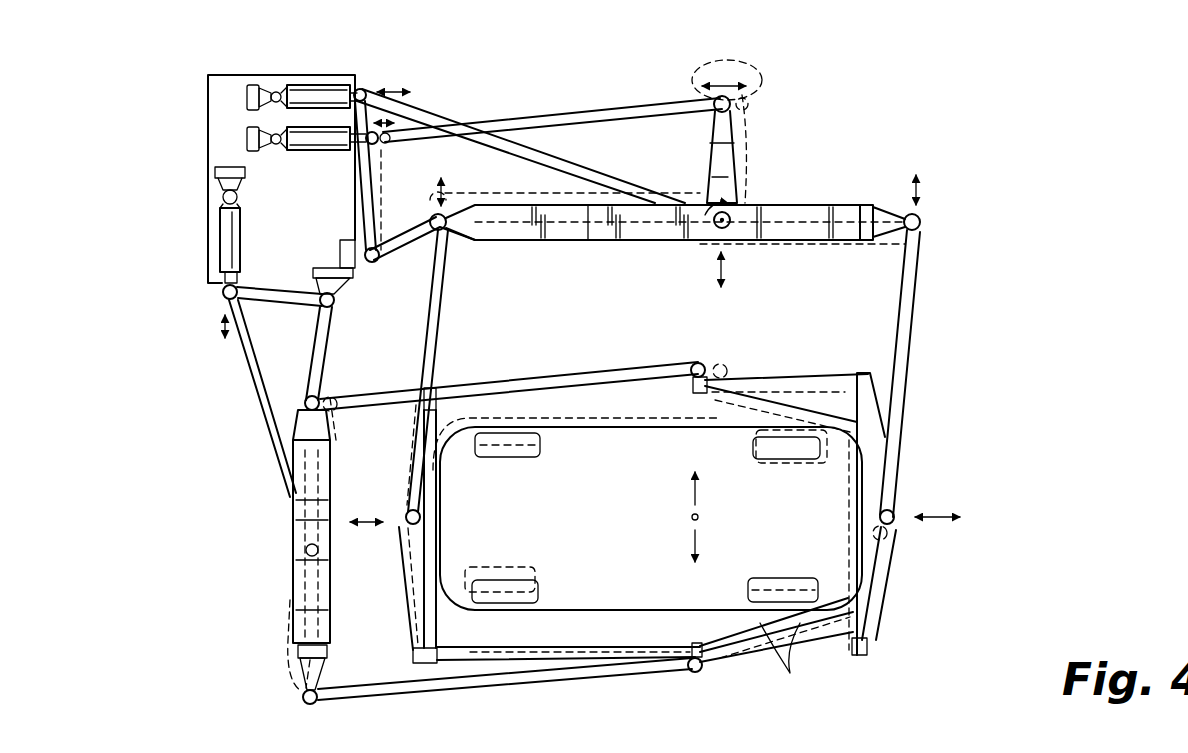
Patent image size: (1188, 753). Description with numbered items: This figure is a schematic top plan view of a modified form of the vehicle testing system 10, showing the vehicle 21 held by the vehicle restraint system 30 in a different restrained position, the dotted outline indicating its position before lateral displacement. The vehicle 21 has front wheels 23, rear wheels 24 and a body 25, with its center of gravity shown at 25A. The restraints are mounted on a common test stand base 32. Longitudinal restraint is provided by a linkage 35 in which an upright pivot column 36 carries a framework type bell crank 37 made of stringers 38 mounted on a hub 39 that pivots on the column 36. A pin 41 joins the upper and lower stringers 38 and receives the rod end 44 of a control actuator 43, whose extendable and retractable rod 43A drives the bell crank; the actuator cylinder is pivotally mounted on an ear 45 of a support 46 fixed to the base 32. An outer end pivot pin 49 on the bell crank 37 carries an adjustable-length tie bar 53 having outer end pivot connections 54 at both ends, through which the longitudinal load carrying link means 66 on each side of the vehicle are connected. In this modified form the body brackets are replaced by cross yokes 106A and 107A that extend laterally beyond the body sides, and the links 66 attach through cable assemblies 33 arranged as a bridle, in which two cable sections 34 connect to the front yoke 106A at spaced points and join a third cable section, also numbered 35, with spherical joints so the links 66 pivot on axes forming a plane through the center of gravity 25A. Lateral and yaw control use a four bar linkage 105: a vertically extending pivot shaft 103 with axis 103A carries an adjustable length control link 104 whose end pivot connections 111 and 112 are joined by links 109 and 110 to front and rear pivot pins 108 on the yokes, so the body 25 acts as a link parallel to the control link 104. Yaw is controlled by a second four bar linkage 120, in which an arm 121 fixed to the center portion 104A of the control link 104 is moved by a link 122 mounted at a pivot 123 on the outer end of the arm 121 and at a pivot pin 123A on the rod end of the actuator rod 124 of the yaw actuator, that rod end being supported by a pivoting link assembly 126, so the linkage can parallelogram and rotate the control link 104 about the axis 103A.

The vehicle testing system 10 is at (822, 150).
The vehicle 21 is at (650, 617).
The front wheels 23 is at (758, 460).
The rear wheels 24 is at (515, 458).
The vehicle body 25 is at (600, 612).
The vehicle center of gravity 25A is at (700, 517).
The vehicle restraint system 30 is at (540, 104).
The test stand base 32 is at (230, 82).
The cable assemblies 33 is at (748, 375).
The cable sections 34 is at (803, 407).
The longitudinal restraint linkage 35 is at (503, 392).
The upright pivot column 36 is at (348, 267).
The bell crank 37 is at (262, 392).
The stringers 38 is at (266, 299).
The hub 39 is at (335, 304).
The pin 41 is at (222, 291).
The control actuator 43 is at (237, 232).
The extendable and retractable rod 43A is at (238, 281).
The rod end 44 is at (218, 300).
The ear 45 is at (222, 197).
The support 46 is at (240, 176).
The outer end pivot pin 49 is at (306, 550).
The tie bar 53 is at (292, 607).
The outer end pivot connections 54 is at (308, 397).
The longitudinal load carrying link means 66 is at (541, 376).
The pivot shaft 103 is at (726, 232).
The pivot shaft axis 103A is at (745, 203).
The control link 104 is at (782, 242).
The center portion of control link 104A is at (660, 228).
The four bar linkage arrangement 105 is at (922, 300).
The front cross yoke 106A is at (882, 574).
The rear cross yoke 107A is at (413, 560).
The front and rear pivot pins 108 is at (409, 515).
The link 109 is at (900, 343).
The link 110 is at (438, 302).
The pivot connection 111 is at (922, 220).
The pivot connection 112 is at (448, 212).
The yaw control four bar linkage 120 is at (497, 99).
The arm 121 is at (705, 154).
The link 122 is at (627, 102).
The pivot 123 is at (725, 70).
The pivot pin 123A is at (389, 143).
The actuator rod 124 is at (353, 152).
The pivoting link assembly 126 is at (380, 192).